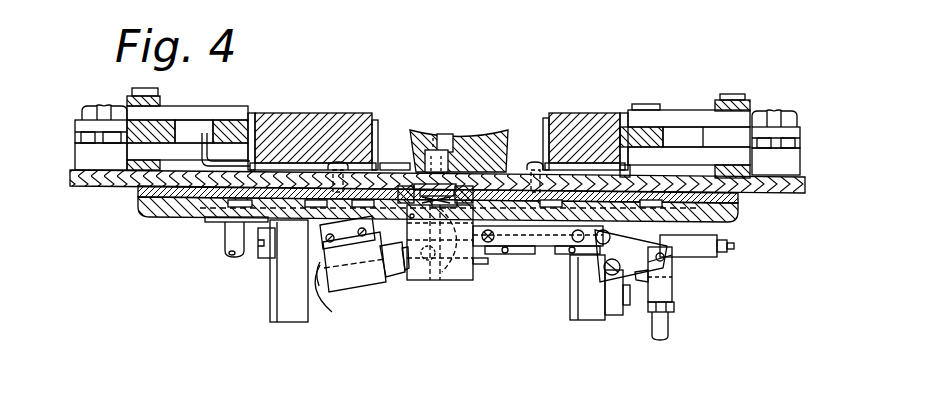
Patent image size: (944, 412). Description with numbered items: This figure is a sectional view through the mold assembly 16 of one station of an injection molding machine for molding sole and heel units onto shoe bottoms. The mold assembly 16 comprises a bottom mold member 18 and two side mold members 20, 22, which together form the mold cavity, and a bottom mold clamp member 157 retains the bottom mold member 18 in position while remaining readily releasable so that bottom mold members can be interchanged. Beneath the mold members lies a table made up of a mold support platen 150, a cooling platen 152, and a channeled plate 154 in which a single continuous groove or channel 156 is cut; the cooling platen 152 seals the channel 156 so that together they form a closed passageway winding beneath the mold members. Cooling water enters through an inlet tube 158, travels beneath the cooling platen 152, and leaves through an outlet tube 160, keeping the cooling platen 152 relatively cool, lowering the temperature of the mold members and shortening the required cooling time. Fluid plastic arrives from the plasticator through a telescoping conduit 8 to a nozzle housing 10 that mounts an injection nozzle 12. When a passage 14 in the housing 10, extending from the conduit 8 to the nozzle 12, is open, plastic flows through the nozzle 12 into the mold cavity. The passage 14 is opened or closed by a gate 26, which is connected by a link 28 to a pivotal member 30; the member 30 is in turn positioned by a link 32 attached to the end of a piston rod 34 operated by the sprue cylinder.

The telescoping conduit 8 is at (362, 266).
The nozzle housing 10 is at (460, 282).
The injection nozzle 12 is at (453, 150).
The passage 14 is at (442, 272).
The mold assembly 16 is at (686, 68).
The bottom mold member 18 is at (496, 128).
The side mold member 20 is at (371, 130).
The side mold member 22 is at (548, 128).
The gate 26 is at (474, 260).
The link 28 is at (524, 246).
The pivotal member 30 is at (585, 198).
The link 32 is at (673, 291).
The piston rod 34 is at (669, 328).
The mold support platen 150 is at (808, 185).
The cooling platen 152 is at (740, 198).
The channeled plate 154 is at (728, 220).
The channel 156 is at (551, 198).
The bottom mold clamp member 157 is at (393, 165).
The inlet tube 158 is at (226, 246).
The outlet tube 160 is at (645, 288).